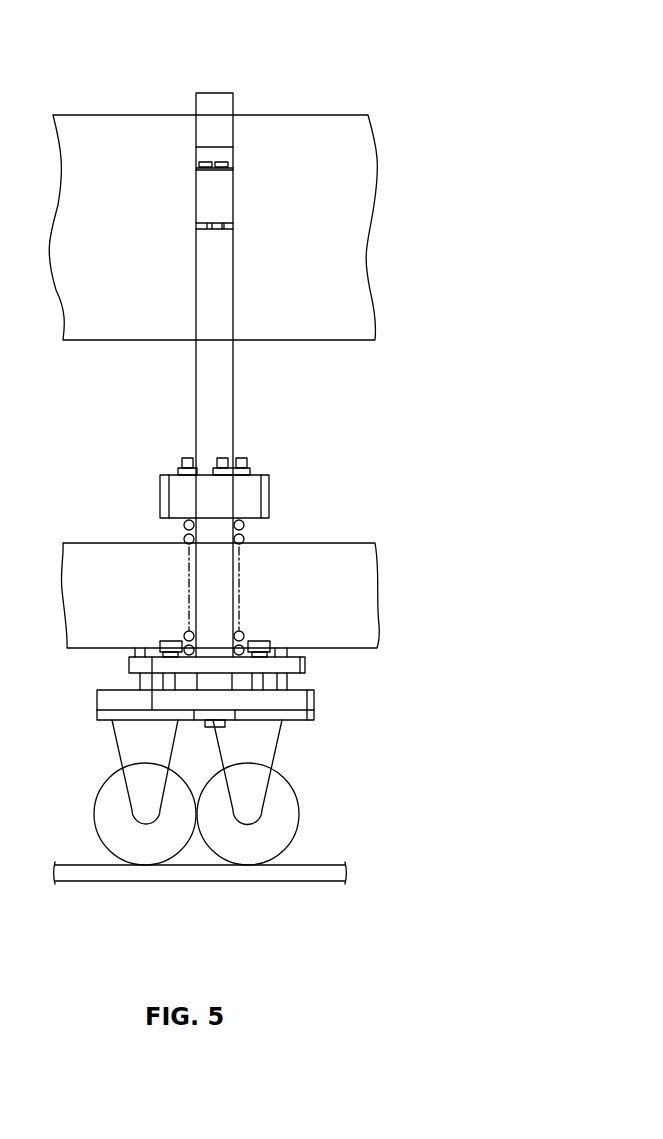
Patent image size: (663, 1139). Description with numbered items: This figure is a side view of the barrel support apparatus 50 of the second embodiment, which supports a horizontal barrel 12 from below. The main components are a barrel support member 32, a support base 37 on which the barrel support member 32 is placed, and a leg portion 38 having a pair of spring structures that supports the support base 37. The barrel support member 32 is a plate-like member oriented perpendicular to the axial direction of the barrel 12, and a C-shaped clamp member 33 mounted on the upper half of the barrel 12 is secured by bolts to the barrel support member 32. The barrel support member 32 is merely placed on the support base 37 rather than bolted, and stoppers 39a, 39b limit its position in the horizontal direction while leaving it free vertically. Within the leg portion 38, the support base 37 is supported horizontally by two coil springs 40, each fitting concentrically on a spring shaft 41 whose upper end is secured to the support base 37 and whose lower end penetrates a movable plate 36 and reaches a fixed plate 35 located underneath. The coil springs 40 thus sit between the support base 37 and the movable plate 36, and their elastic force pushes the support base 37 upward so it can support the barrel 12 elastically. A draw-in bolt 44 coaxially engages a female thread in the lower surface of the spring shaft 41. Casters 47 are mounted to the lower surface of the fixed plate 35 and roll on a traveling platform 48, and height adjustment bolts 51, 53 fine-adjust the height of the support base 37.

The barrel 12 is at (95, 128).
The barrel support member 32 is at (207, 383).
The clamp member 33 is at (214, 100).
The fixed plate 35 is at (297, 702).
The movable plate 36 is at (300, 665).
The support base 37 is at (253, 488).
The leg portion 38 is at (272, 562).
The stopper 39a is at (248, 465).
The stopper 39b is at (180, 467).
The coil spring 40 is at (244, 634).
The spring shaft 41 is at (212, 573).
The draw-in bolt 44 is at (215, 727).
The caster 47 is at (284, 784).
The traveling platform 48 is at (325, 870).
The barrel support apparatus 50 is at (442, 389).
The height adjustment bolt 51 is at (173, 640).
The height adjustment bolt 53 is at (140, 683).